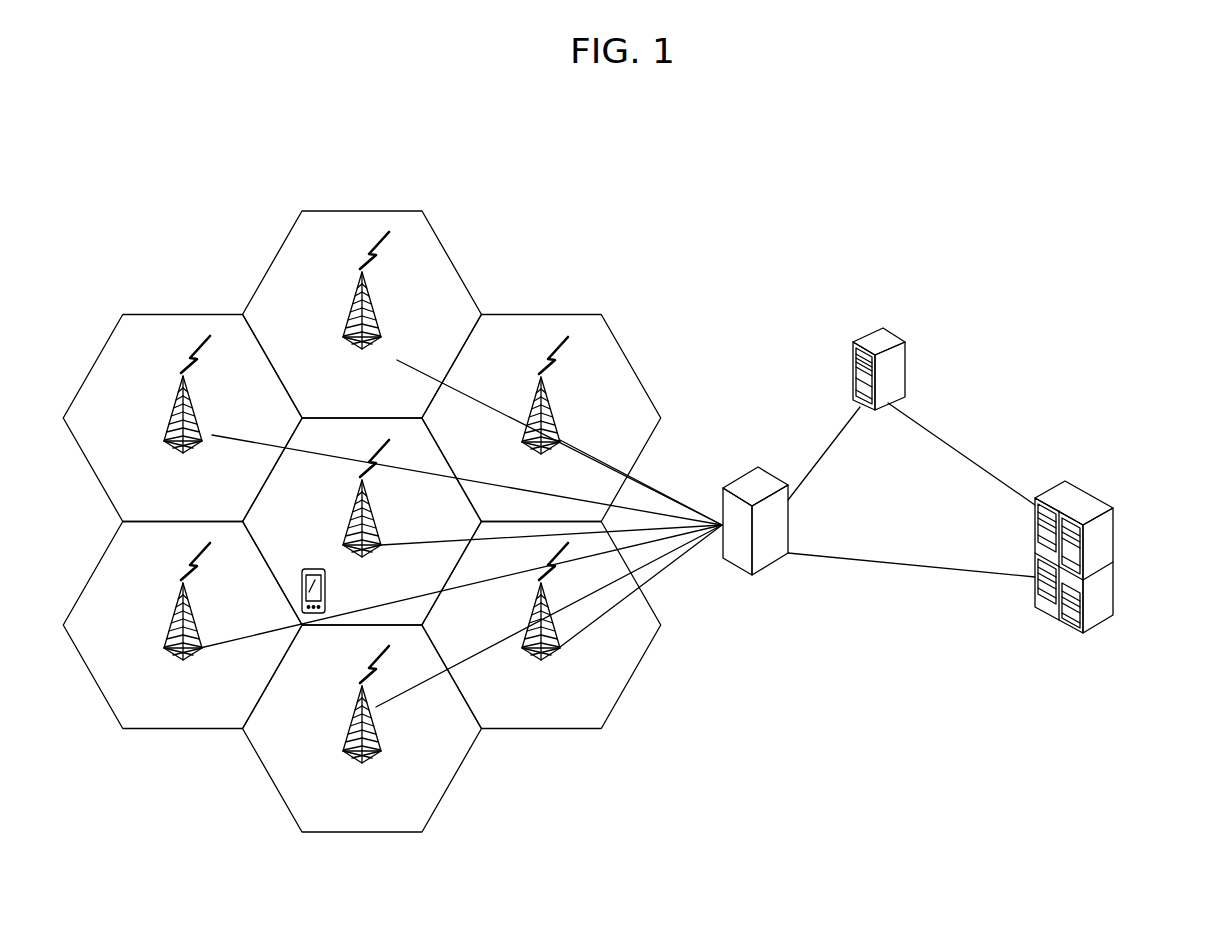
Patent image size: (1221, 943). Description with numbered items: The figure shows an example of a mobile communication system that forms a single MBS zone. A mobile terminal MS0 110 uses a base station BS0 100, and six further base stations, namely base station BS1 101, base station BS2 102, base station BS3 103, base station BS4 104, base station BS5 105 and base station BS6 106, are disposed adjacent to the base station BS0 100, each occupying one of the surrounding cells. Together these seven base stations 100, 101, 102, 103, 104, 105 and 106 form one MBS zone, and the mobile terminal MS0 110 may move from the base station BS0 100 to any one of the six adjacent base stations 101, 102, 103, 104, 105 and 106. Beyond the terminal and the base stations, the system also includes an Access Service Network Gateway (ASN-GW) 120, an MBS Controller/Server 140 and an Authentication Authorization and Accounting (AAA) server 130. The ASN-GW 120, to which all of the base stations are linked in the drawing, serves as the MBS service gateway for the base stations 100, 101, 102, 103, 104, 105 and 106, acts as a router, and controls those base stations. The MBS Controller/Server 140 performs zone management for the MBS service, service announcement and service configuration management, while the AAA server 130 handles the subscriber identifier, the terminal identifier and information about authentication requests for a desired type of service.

The base station BS0 100 is at (376, 526).
The base station BS1 101 is at (376, 320).
The base station BS2 102 is at (555, 422).
The base station BS3 103 is at (527, 624).
The base station BS4 104 is at (376, 728).
The base station BS5 105 is at (197, 627).
The base station BS6 106 is at (197, 420).
The mobile terminal MS0 110 is at (305, 569).
The Access Service Network Gateway (ASN-GW) 120 is at (758, 467).
The AAA server 130 is at (884, 328).
The MBS Controller/Server 140 is at (1068, 487).